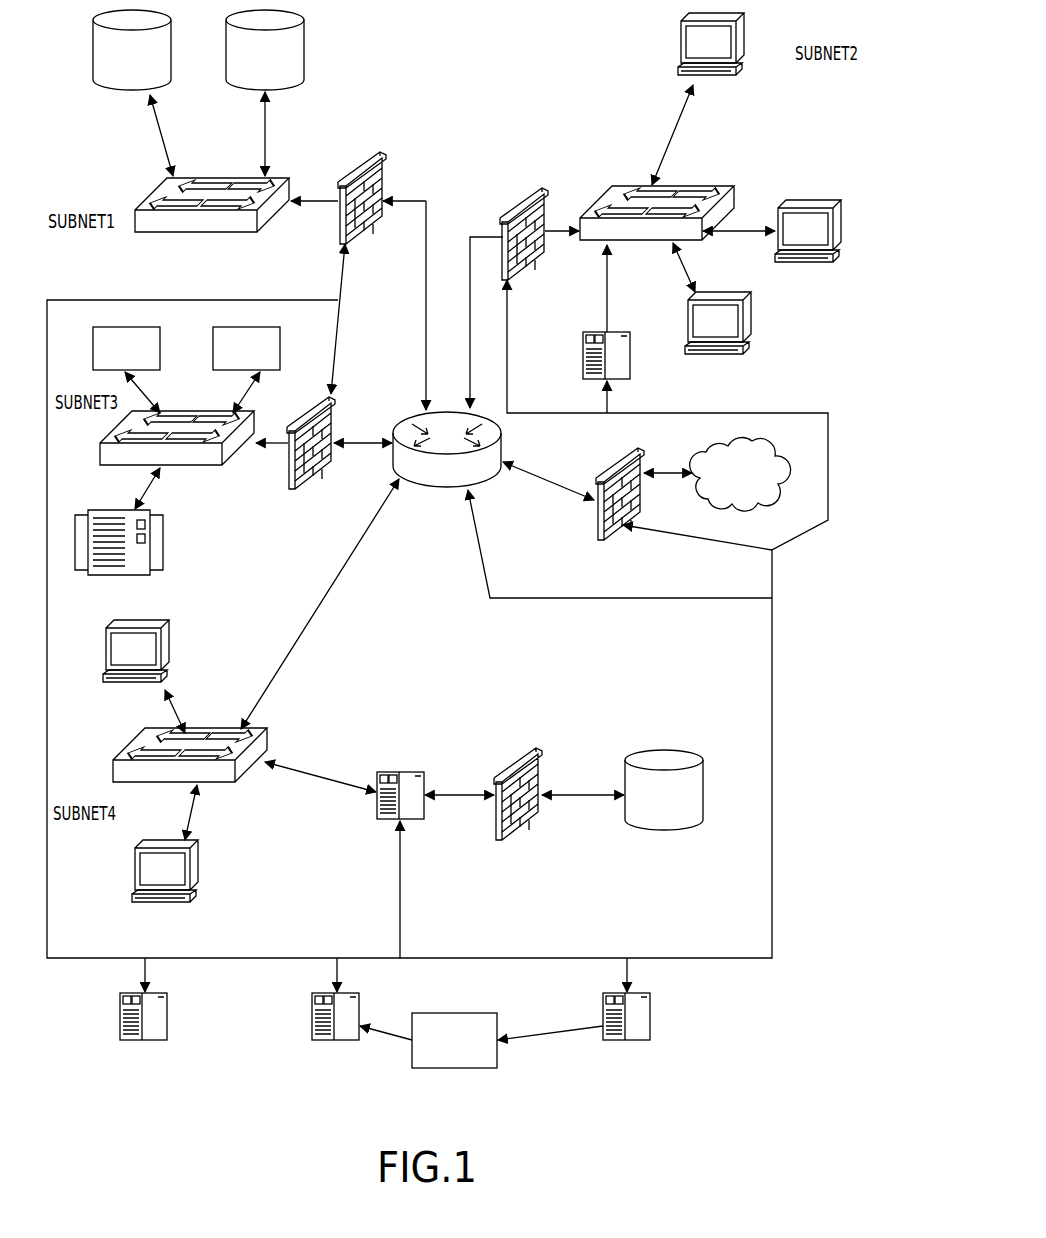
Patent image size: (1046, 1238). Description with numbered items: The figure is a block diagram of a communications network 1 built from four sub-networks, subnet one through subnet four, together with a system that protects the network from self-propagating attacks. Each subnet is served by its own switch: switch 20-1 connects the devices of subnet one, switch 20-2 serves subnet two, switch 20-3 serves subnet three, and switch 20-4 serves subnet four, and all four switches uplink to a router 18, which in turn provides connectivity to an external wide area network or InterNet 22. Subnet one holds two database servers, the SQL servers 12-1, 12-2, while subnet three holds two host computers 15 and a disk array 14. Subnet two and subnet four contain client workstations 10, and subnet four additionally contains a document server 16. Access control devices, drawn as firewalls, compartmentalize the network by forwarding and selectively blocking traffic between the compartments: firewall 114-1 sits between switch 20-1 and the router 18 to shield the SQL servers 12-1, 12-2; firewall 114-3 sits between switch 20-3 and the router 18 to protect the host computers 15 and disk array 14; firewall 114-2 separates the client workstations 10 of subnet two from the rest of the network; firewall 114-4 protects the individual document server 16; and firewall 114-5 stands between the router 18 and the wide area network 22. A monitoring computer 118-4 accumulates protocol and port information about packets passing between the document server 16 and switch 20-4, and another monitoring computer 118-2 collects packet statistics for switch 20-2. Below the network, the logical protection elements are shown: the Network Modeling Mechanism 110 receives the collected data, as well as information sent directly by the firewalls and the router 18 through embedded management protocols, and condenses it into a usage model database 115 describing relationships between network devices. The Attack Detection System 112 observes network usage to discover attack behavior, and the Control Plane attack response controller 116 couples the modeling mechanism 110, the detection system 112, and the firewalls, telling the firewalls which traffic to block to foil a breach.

The communications network 1 is at (448, 145).
The workstations 10 is at (680, 35).
The SQL server 12-1 is at (265, 50).
The SQL server 12-2 is at (132, 50).
The disk array 14 is at (163, 548).
The host computers 15 is at (160, 348).
The document server 16 is at (676, 752).
The router 18 is at (435, 488).
The switch 20-1 is at (208, 218).
The switch 20-2 is at (593, 203).
The switch 20-3 is at (205, 468).
The switch 20-4 is at (270, 740).
The wide area network or InterNet 22 is at (740, 474).
The Network Modeling Mechanism 110 is at (631, 1031).
The Attack Detection System 112 is at (336, 1044).
The access control device 114-1 is at (381, 153).
The access control device 114-2 is at (527, 281).
The access control device 114-3 is at (330, 420).
The access control device 114-4 is at (540, 775).
The access control device 114-5 is at (600, 526).
The usage model database 115 is at (445, 1070).
The Control Plane/attack response controller 116 is at (153, 1031).
The monitoring computer 118-2 is at (630, 355).
The monitoring computer 118-4 is at (402, 772).